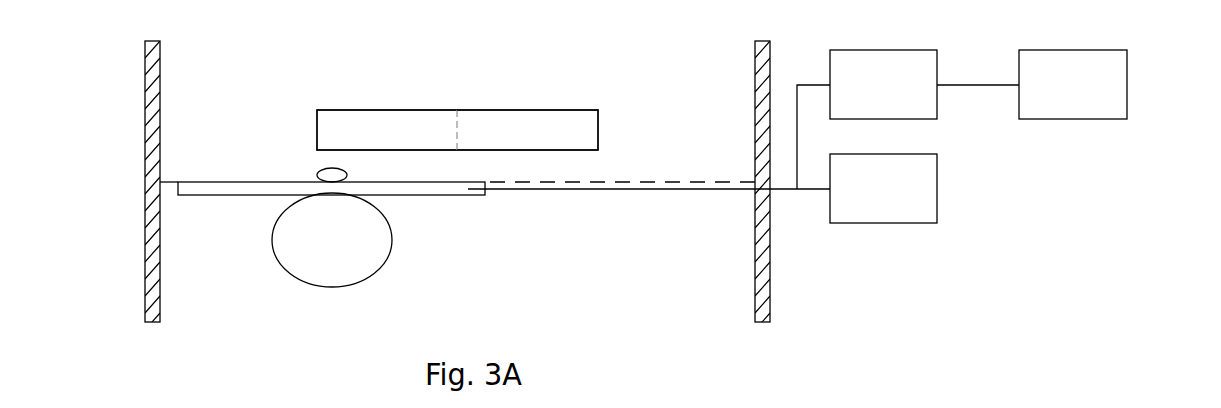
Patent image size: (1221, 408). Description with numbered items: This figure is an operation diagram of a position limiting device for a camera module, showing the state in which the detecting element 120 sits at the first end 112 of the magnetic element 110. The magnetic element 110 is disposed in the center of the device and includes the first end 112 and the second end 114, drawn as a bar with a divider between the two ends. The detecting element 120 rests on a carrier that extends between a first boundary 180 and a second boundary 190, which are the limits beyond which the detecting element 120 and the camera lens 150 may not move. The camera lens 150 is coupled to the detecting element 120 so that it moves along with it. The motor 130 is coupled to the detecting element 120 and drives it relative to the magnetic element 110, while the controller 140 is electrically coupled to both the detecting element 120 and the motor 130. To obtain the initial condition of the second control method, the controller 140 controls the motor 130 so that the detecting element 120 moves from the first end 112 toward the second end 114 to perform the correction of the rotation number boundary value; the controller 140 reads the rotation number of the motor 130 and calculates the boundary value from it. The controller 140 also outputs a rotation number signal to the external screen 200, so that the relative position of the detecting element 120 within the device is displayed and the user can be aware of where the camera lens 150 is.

The magnetic element 110 is at (510, 110).
The first end 112 is at (317, 128).
The second end 114 is at (598, 130).
The detecting element 120 is at (347, 175).
The motor 130 is at (937, 190).
The controller 140 is at (937, 97).
The camera lens 150 is at (392, 240).
The first boundary 180 is at (152, 322).
The second boundary 190 is at (760, 322).
The external screen 200 is at (1127, 97).